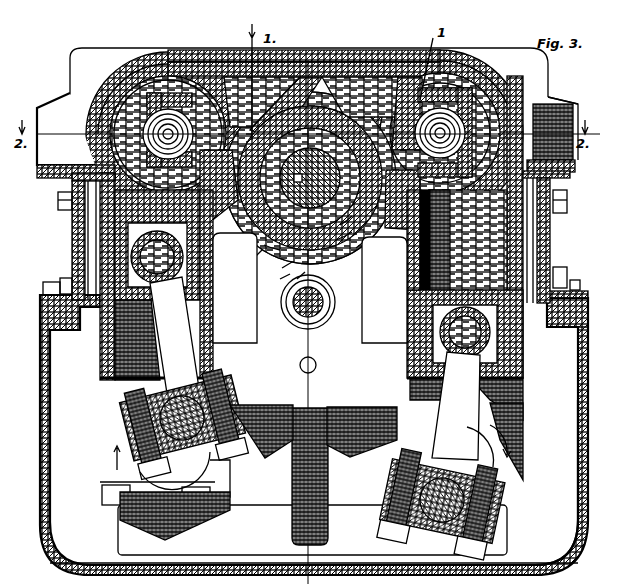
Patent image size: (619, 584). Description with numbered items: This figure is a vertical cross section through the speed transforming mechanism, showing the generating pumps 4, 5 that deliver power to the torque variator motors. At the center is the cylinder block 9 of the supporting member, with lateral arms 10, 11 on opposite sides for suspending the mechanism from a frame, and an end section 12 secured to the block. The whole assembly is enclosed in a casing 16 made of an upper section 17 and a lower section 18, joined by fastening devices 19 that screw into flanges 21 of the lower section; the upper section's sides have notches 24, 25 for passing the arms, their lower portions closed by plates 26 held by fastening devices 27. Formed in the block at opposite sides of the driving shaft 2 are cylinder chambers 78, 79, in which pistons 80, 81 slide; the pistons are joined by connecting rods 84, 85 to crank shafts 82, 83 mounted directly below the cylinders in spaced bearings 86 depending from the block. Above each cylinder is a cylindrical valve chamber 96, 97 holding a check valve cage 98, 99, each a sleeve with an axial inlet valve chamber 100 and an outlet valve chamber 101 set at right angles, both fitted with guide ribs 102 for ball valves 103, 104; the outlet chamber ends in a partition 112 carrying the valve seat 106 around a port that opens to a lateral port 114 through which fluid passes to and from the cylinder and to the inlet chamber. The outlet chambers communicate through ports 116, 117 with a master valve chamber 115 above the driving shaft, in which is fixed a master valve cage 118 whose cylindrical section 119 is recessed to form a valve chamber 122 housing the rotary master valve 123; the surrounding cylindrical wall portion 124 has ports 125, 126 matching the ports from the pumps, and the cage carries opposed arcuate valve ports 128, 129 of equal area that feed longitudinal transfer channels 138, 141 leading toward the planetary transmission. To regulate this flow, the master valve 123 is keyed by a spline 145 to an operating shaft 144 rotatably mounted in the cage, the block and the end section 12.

The driving shaft 2 is at (298, 324).
The generating pump 4 is at (100, 255).
The generating pump 5 is at (523, 243).
The cylinder block 9 is at (523, 186).
The lateral arm 10 is at (44, 103).
The lateral arm 11 is at (571, 104).
The end section 12 is at (122, 543).
The casing 16 is at (589, 297).
The upper section 17 is at (193, 62).
The lower section 18 is at (557, 530).
The fastening device 19 is at (58, 282).
The flange 21 is at (562, 327).
The notch 24 is at (72, 89).
The notch 25 is at (552, 96).
The plate 26 is at (73, 243).
The fastening device 27 is at (552, 210).
The cylinder chamber 78 is at (103, 358).
The cylinder chamber 79 is at (425, 329).
The piston 80 is at (181, 299).
The piston 81 is at (407, 358).
The crank shaft 82 is at (207, 458).
The crank shaft 83 is at (447, 532).
The connecting rod 84 is at (238, 379).
The connecting rod 85 is at (447, 409).
The bearing 86 is at (108, 432).
The valve chamber 96 is at (127, 62).
The valve chamber 97 is at (483, 85).
The check valve cage 98 is at (150, 75).
The check valve cage 99 is at (473, 82).
The inlet valve chamber 100 is at (97, 132).
The outlet valve chamber 101 is at (199, 68).
The guide rib 102 is at (97, 145).
The ball valve 103 is at (98, 117).
The ball valve 104 is at (166, 112).
The valve seat 106 is at (510, 71).
The partition 112 is at (93, 158).
The lateral port 114 is at (112, 188).
The master valve chamber 115 is at (282, 273).
The port 116 is at (231, 78).
The port 117 is at (392, 128).
The master valve cage 118 is at (280, 279).
The cylindrical section 119 is at (258, 273).
The valve chamber 122 is at (346, 266).
The rotary master valve 123 is at (349, 275).
The cylindrical wall portion 124 is at (297, 279).
The port 125 is at (254, 265).
The port 126 is at (343, 258).
The arcuate valve port 128 is at (330, 55).
The arcuate valve port 129 is at (345, 130).
The transfer channel 138 is at (263, 84).
The transfer channel 141 is at (357, 150).
The operating shaft 144 is at (297, 188).
The spline 145 is at (294, 178).